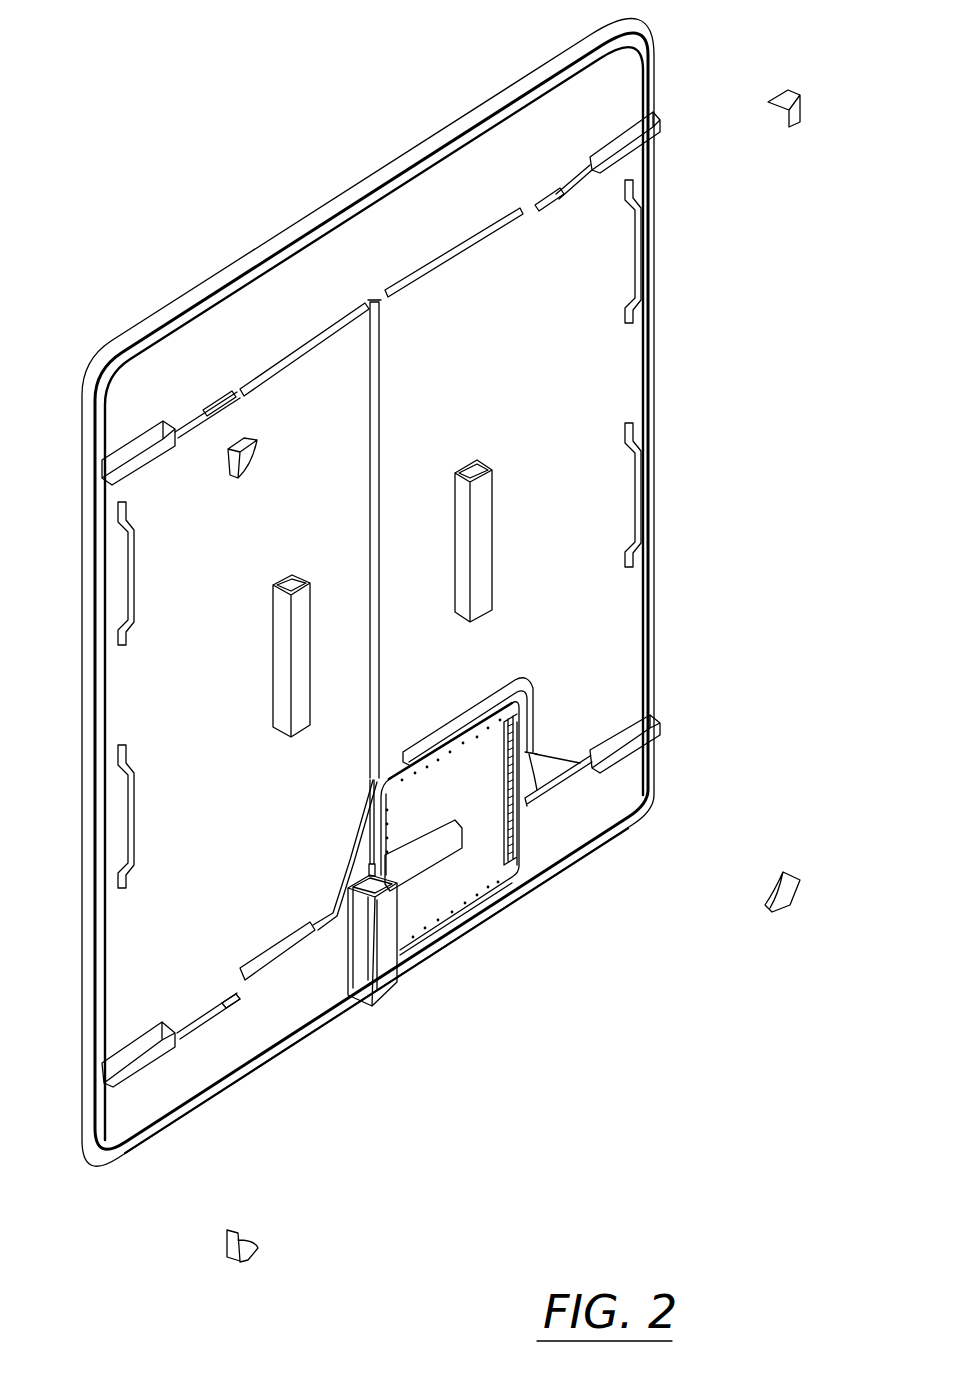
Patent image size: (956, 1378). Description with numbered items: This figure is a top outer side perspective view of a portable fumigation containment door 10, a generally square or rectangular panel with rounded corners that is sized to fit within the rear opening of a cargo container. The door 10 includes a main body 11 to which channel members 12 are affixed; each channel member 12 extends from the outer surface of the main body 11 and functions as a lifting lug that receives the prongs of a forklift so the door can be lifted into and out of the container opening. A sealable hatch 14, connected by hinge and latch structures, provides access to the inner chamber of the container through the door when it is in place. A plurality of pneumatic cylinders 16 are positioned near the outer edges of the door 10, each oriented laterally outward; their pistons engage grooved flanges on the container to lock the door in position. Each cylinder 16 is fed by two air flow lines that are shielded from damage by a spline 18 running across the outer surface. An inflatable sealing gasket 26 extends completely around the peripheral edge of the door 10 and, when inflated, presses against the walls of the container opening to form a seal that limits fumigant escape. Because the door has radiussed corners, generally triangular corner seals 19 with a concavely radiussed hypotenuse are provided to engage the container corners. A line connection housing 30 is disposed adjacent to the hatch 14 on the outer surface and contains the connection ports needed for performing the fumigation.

The portable fumigation containment door 10 is at (126, 123).
The main body 11 is at (268, 302).
The inflatable sealing gasket 26 is at (517, 83).
The spline 18 is at (382, 372).
The pneumatic cylinder 16 is at (560, 186).
The channel member 12 is at (455, 548).
The corner seal 19 is at (778, 91).
The sealable hatch 14 is at (465, 882).
The line connection housing 30 is at (403, 997).